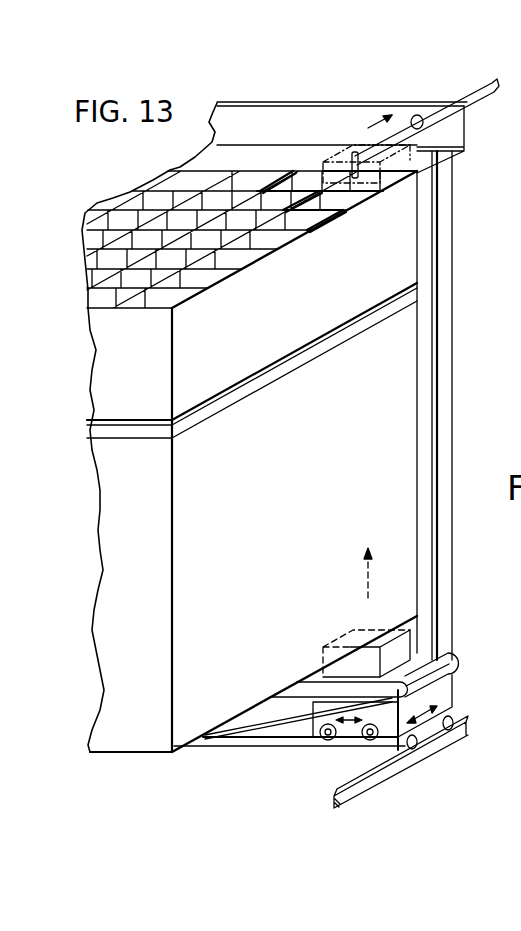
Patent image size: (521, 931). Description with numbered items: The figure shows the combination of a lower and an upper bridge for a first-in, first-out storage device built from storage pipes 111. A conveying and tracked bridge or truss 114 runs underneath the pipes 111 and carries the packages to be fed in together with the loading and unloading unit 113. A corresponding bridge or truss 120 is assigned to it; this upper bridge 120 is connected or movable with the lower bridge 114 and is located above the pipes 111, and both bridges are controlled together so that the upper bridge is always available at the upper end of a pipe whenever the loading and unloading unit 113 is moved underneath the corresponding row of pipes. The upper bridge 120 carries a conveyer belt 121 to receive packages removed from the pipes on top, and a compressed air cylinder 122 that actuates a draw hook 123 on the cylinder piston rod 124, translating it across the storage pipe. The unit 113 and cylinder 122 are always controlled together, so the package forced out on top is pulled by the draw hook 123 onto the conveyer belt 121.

The pipes 111 is at (113, 257).
The loading and unloading unit 113 is at (350, 730).
The lower bridge 114 is at (257, 744).
The upper bridge 120 is at (262, 122).
The conveyer belt 121 is at (453, 152).
The compressed air cylinder 122 is at (455, 97).
The draw hook 123 is at (344, 158).
The cylinder piston rod 124 is at (447, 138).